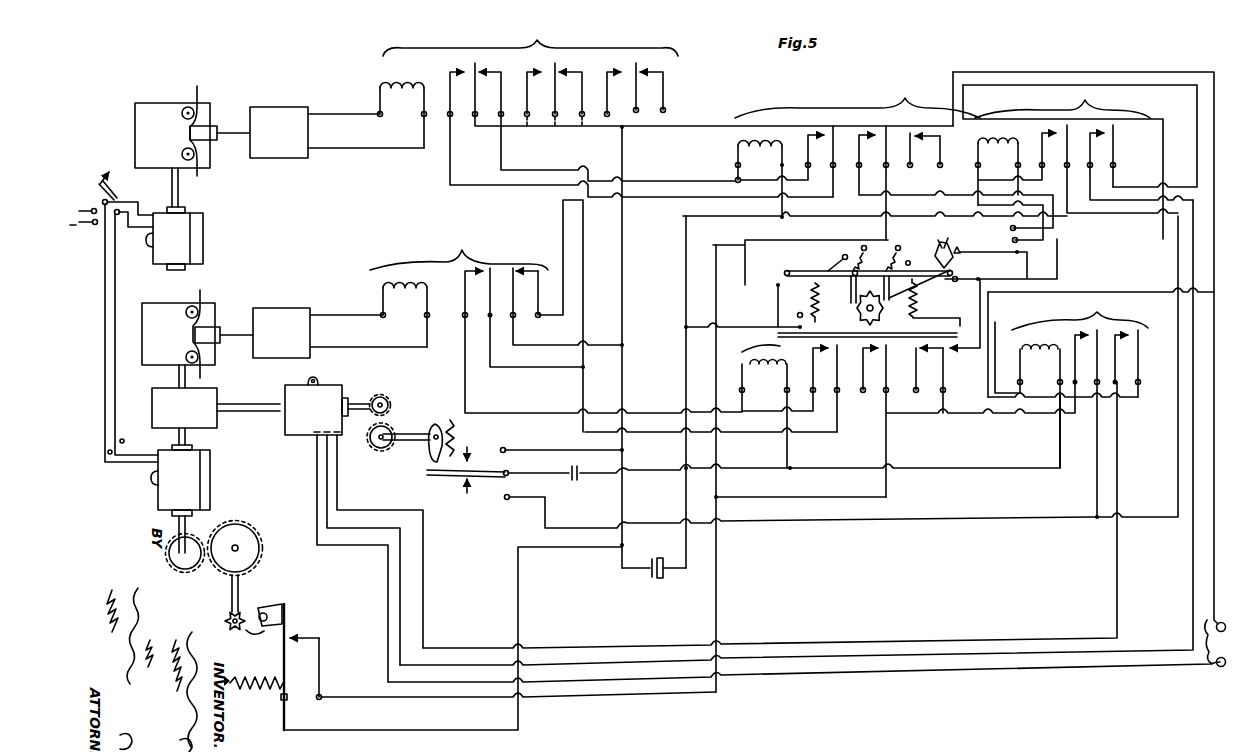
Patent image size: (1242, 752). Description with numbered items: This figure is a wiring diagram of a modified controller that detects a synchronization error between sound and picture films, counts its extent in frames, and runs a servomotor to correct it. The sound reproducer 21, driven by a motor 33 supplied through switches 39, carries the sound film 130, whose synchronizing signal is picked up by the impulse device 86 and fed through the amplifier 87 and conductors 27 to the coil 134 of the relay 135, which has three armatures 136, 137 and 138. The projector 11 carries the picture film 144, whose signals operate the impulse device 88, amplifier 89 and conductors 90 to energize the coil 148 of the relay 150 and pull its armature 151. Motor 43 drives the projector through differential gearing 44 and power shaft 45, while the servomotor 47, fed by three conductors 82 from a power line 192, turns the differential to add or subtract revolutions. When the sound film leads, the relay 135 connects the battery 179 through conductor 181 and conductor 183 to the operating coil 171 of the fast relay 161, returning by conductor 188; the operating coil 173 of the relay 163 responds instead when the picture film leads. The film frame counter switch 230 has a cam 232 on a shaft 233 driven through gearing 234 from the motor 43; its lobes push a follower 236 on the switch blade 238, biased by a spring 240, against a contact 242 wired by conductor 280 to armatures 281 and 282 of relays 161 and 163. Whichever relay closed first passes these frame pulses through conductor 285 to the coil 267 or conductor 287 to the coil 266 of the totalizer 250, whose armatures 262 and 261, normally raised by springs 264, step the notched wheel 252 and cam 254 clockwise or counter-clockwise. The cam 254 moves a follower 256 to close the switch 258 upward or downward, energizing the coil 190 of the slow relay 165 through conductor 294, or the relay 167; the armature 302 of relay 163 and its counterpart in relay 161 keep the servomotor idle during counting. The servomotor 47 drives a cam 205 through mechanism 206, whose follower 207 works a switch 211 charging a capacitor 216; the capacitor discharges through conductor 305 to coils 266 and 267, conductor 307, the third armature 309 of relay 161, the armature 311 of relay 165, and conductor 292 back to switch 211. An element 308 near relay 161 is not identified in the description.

The sound reproducer 21 is at (158, 110).
The sound film 130 is at (198, 92).
The signal impulse device 86 is at (205, 128).
The amplifier 87 is at (275, 107).
The conductors 27 is at (365, 118).
The switches 39 is at (99, 184).
The motor 33 is at (205, 238).
The projector 11 is at (212, 304).
The motion picture film 144 is at (188, 320).
The impulse device 88 is at (210, 328).
The amplifier 89 is at (277, 308).
The conductors 90 is at (326, 346).
The power shaft 45 is at (178, 378).
The differential gearing 44 is at (216, 419).
The motor 43 is at (180, 483).
The servomotor 47 is at (330, 396).
The motion transmitting mechanism 206 is at (390, 425).
The cam 205 is at (427, 450).
The cam follower 207 is at (425, 468).
The switch 211 is at (465, 480).
The capacitor 216 is at (573, 480).
The conductor 292 is at (1178, 464).
The conductor 181 is at (626, 498).
The battery 179 is at (658, 579).
The conductor 188 is at (686, 380).
The conductor 280 is at (625, 696).
The conductors 82 is at (910, 672).
The power line 192 is at (1200, 628).
The gearing 234 is at (237, 532).
The shaft 233 is at (230, 595).
The cam 232 is at (223, 627).
The film frame counter switch 230 is at (266, 600).
The follower 236 is at (258, 636).
The contact 242 is at (300, 631).
The switch blade 238 is at (282, 672).
The spring 240 is at (266, 692).
The relay 135 is at (540, 40).
The coil 134 is at (396, 80).
The armature 136 is at (480, 70).
The armature 137 is at (559, 70).
The armature 138 is at (662, 74).
The conductor 183 is at (450, 170).
The relay 150 is at (463, 254).
The coil 148 is at (394, 288).
The armature 151 is at (499, 272).
The relay 161 is at (900, 100).
The operating coil 171 is at (752, 148).
The armature 281 is at (930, 311).
The third armature 309 is at (925, 148).
The relay contact 308 is at (951, 113).
The relay 165 is at (1042, 114).
The coil 190 is at (990, 142).
The armature 311 is at (1070, 138).
The conductor 307 is at (745, 234).
The conductor 305 is at (728, 328).
The totalizer 250 is at (775, 266).
The armature 261 is at (832, 262).
The springs 264 is at (858, 251).
The cam 254 is at (904, 250).
The notched wheel 252 is at (900, 297).
The follower 256 is at (942, 240).
The switch 258 is at (956, 229).
The armature 262 is at (955, 272).
The conductor 285 is at (1060, 266).
The conductor 294 is at (1104, 246).
The coil 266 is at (817, 301).
The relay 163 is at (856, 334).
The coil 267 is at (922, 310).
The relay 167 is at (1086, 314).
The armature 302 is at (948, 352).
The armature 282 is at (896, 388).
The operating coil 173 is at (770, 368).
The conductor 287 is at (952, 442).